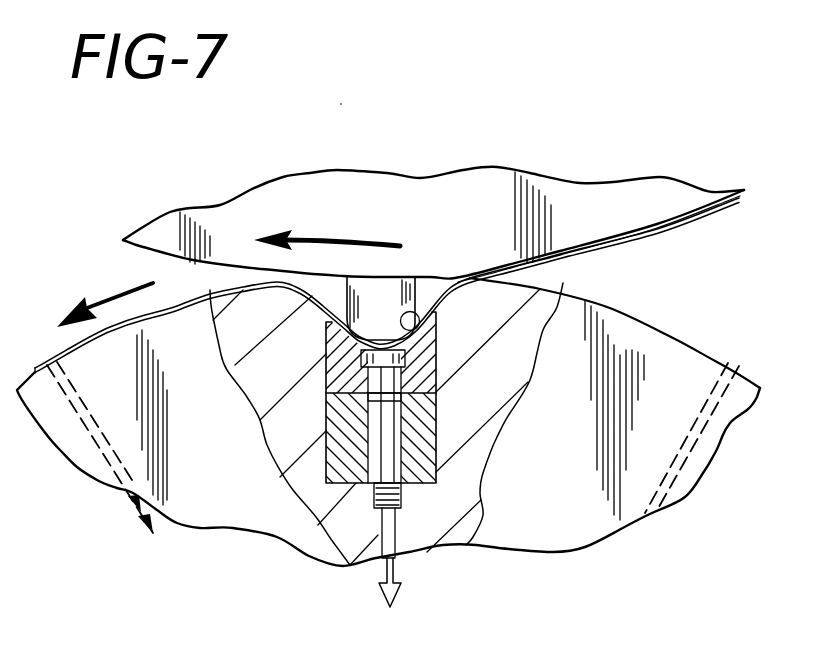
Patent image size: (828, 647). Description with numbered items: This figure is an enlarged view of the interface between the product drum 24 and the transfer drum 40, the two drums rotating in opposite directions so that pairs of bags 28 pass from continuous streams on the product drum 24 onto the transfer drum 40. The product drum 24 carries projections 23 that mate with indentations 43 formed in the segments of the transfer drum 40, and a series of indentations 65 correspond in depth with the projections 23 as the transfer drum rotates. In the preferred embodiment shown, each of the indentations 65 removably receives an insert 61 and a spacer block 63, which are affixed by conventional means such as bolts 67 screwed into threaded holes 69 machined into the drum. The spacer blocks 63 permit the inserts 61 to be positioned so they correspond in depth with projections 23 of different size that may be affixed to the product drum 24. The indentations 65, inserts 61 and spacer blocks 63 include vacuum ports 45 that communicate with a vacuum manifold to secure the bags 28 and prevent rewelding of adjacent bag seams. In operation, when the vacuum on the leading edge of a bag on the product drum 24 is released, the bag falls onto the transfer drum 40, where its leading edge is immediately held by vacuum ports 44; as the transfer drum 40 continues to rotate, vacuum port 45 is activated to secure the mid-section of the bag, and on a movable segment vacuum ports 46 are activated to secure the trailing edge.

The product drum 24 is at (577, 200).
The bags 28 is at (604, 257).
The projections 23 is at (420, 295).
The indentations 43 is at (419, 322).
The transfer drum 40 is at (707, 343).
The vacuum ports 44 is at (107, 462).
The vacuum ports 46 is at (672, 487).
The inserts 61 is at (436, 372).
The spacer blocks 63 is at (436, 423).
The indentations 65 is at (422, 433).
The bolts 67 is at (427, 500).
The threaded holes 69 is at (375, 508).
The vacuum ports 45 is at (400, 530).